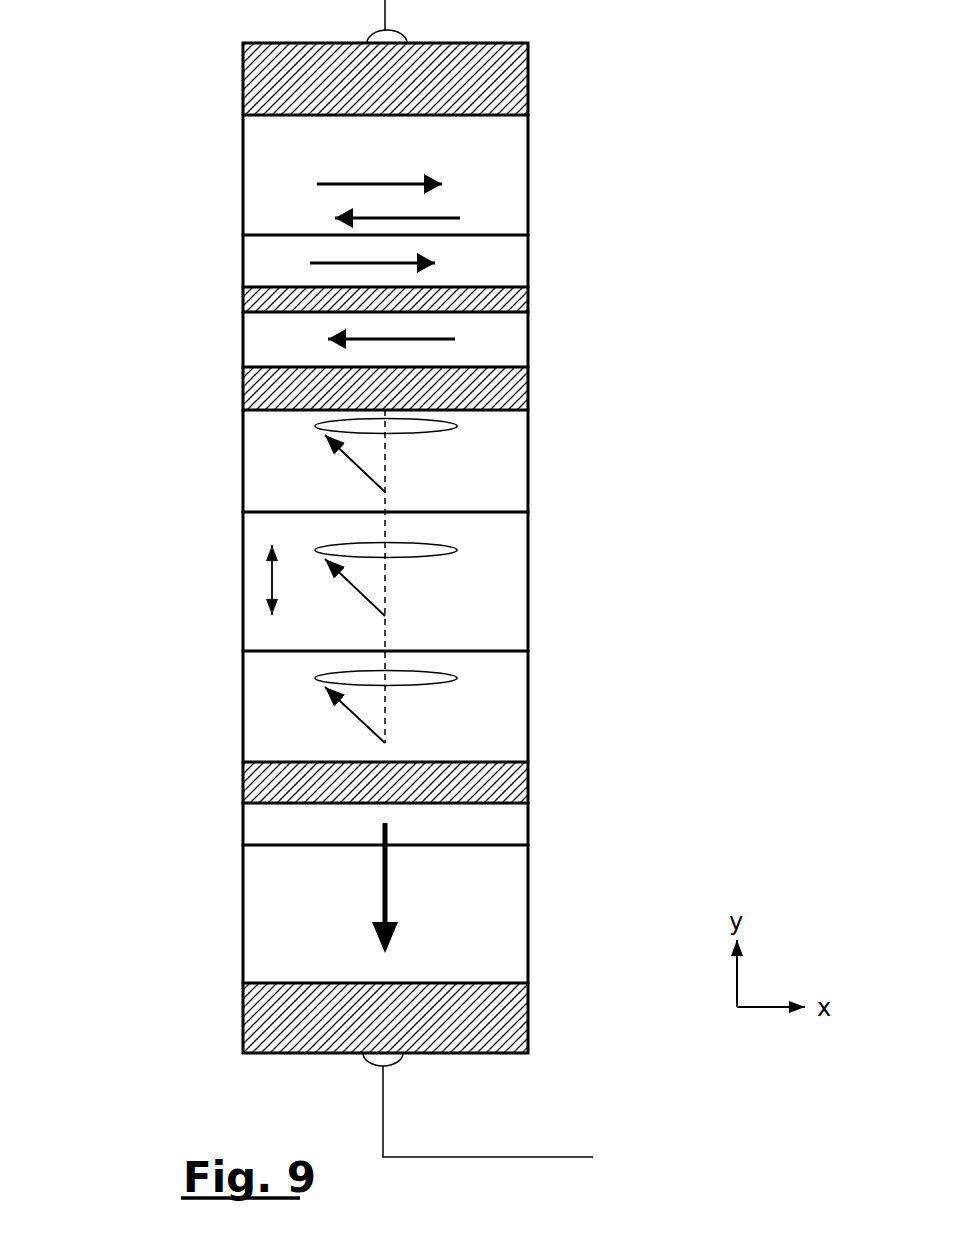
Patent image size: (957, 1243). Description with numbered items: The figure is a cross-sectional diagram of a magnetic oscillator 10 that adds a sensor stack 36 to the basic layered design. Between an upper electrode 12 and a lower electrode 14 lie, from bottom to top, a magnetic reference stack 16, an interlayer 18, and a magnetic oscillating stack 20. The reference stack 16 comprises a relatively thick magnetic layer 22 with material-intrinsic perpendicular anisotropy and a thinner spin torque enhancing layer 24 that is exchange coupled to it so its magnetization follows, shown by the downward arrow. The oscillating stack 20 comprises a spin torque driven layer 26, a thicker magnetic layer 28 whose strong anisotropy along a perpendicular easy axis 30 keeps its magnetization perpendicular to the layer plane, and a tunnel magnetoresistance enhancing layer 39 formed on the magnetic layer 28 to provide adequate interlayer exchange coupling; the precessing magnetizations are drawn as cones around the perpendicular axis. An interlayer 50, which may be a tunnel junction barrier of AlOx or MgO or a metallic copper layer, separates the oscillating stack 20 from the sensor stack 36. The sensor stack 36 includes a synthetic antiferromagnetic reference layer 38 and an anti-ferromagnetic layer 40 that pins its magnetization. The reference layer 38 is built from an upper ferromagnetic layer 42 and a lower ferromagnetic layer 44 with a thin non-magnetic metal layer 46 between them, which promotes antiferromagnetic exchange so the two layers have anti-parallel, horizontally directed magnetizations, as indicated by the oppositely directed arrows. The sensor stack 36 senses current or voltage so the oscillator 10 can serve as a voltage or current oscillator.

The magnetic oscillator 10 is at (465, 578).
The upper electrode 12 is at (528, 82).
The lower electrode 14 is at (528, 1018).
The magnetic reference stack 16 is at (374, 893).
The interlayer 18 is at (528, 783).
The magnetic oscillating stack 20 is at (360, 585).
The magnetic layer 22 is at (528, 915).
The spin torque enhancing layer 24 is at (528, 825).
The spin torque driven layer 26 is at (528, 707).
The magnetic layer 28 is at (528, 583).
The perpendicular easy axis 30 is at (192, 605).
The sensor stack 36 is at (328, 241).
The synthetic antiferromagnetic reference layer 38 is at (370, 292).
The tunnel magnetoresistance enhancing layer 39 is at (528, 473).
The anti-ferromagnetic layer 40 is at (528, 172).
The upper ferromagnetic layer 42 is at (528, 262).
The lower ferromagnetic layer 44 is at (528, 348).
The non-magnetic metal layer 46 is at (528, 300).
The interlayer 50 is at (528, 387).